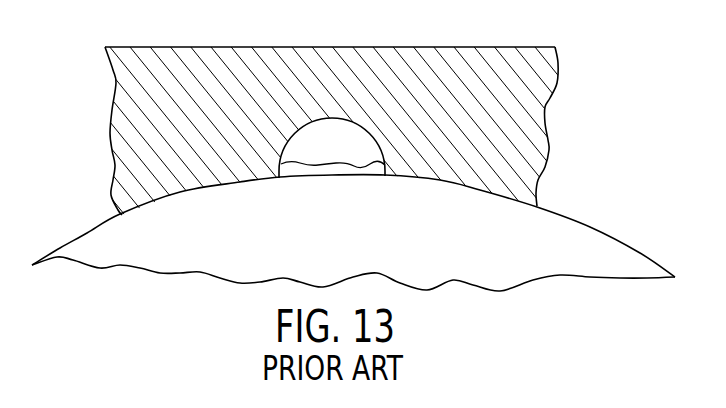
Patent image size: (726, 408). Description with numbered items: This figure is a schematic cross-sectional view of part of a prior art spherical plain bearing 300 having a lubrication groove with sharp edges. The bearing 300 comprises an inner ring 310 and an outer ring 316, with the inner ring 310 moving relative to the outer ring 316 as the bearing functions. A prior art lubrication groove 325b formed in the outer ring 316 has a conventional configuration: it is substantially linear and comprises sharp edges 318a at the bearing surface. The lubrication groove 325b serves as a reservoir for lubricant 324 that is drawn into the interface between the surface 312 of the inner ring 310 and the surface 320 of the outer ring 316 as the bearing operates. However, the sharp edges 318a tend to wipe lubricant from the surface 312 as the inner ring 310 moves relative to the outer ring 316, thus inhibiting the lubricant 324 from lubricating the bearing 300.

The bearing 300 is at (583, 62).
The inner ring 310 is at (186, 251).
The surface 312 is at (591, 227).
The outer ring 316 is at (303, 47).
The sharp edges 318a is at (279, 178).
The surface 320 is at (150, 203).
The lubricant 324 is at (315, 163).
The prior art lubrication groove 325b is at (359, 155).